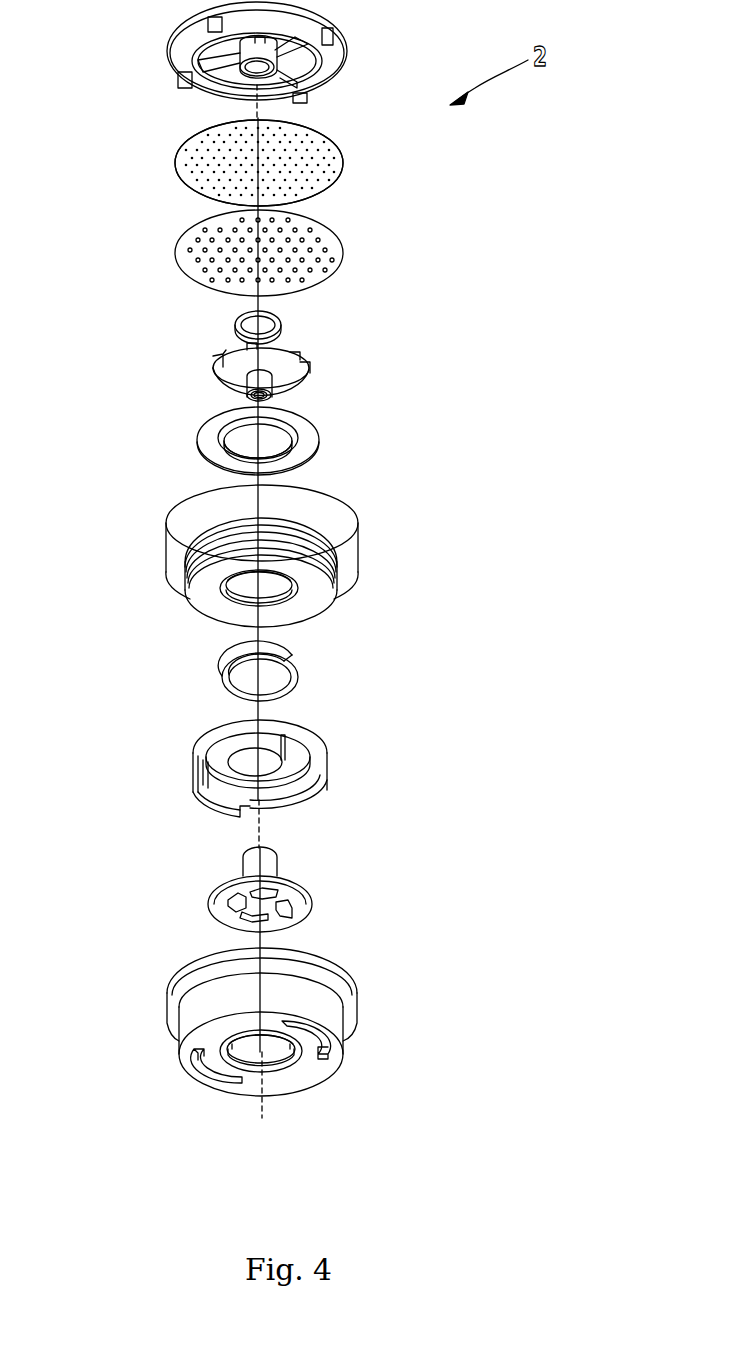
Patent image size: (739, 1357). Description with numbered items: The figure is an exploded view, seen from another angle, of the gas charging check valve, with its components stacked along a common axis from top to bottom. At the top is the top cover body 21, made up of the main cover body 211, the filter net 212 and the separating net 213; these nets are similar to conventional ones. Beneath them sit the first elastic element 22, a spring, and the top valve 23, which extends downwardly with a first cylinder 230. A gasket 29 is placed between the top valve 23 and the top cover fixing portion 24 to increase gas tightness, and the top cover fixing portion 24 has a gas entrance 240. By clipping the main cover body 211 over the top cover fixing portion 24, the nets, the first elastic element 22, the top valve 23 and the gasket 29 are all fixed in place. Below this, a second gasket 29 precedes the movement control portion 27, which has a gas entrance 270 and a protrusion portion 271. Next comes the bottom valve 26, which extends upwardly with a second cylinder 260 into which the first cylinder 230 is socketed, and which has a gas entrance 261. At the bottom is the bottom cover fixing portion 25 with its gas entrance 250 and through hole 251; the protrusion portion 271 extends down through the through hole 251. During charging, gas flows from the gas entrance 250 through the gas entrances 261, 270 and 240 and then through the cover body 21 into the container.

The top cover body 21 is at (100, 50).
The main cover body 211 is at (180, 62).
The filter net 212 is at (175, 160).
The separating net 213 is at (177, 253).
The first elastic element 22 is at (233, 326).
The top valve 23 is at (213, 372).
The first cylinder 230 is at (273, 386).
The gasket 29 is at (210, 438).
The top cover fixing portion 24 is at (175, 534).
The gas entrance of the top cover fixing portion 240 is at (253, 588).
The movement control portion 27 is at (330, 762).
The gas entrance of the movement control portion 270 is at (236, 758).
The protrusion portion 271 is at (215, 798).
The bottom valve 26 is at (217, 917).
The second cylinder 260 is at (247, 860).
The gas entrance of the bottom valve 261 is at (235, 900).
The bottom cover fixing portion 25 is at (190, 1015).
The gas entrance of the bottom cover fixing portion 250 is at (280, 1053).
The through hole 251 is at (197, 1062).